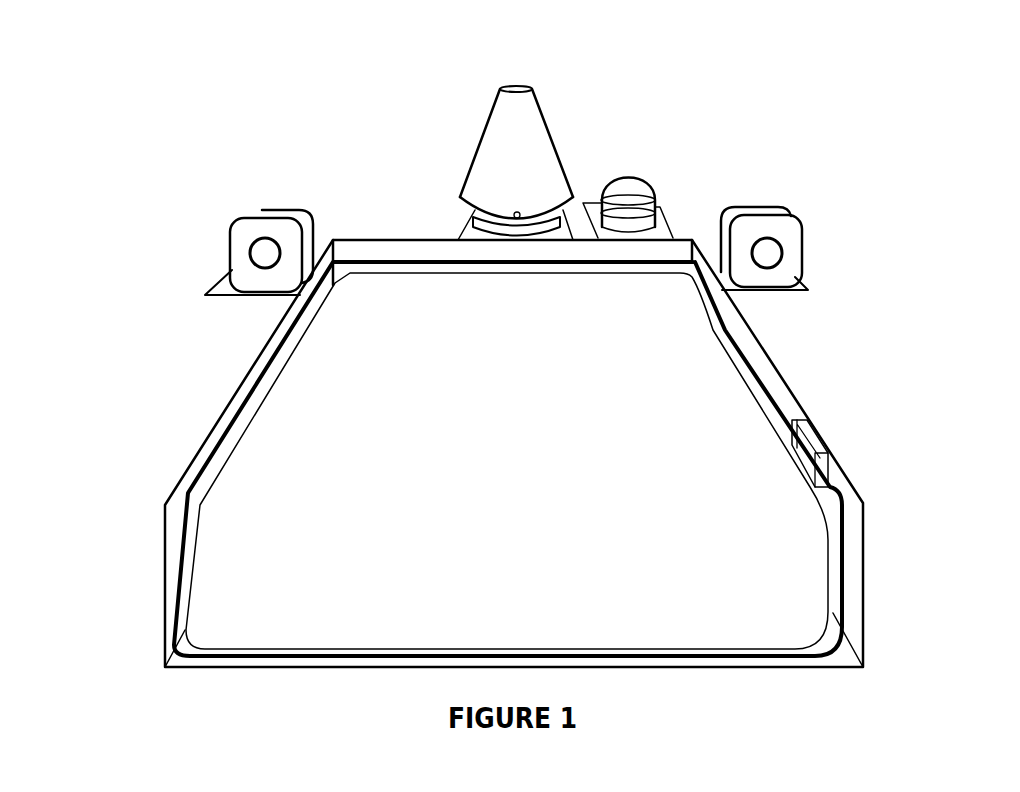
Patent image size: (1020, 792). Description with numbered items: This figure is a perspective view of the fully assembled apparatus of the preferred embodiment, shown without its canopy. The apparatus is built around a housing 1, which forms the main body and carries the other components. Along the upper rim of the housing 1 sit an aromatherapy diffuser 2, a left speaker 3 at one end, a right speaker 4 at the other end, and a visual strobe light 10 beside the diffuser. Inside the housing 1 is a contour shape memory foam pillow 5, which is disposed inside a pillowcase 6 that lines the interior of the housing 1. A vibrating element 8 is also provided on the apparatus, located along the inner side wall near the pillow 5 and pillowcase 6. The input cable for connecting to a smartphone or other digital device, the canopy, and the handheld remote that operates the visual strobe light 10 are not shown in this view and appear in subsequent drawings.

The housing 1 is at (163, 512).
The aromatherapy diffuser 2 is at (483, 128).
The left speaker 3 is at (232, 232).
The right speaker 4 is at (733, 210).
The contour shape memory foam pillow 5 is at (731, 392).
The pillowcase 6 is at (775, 407).
The vibrating element 8 is at (817, 440).
The visual strobe light 10 is at (617, 177).